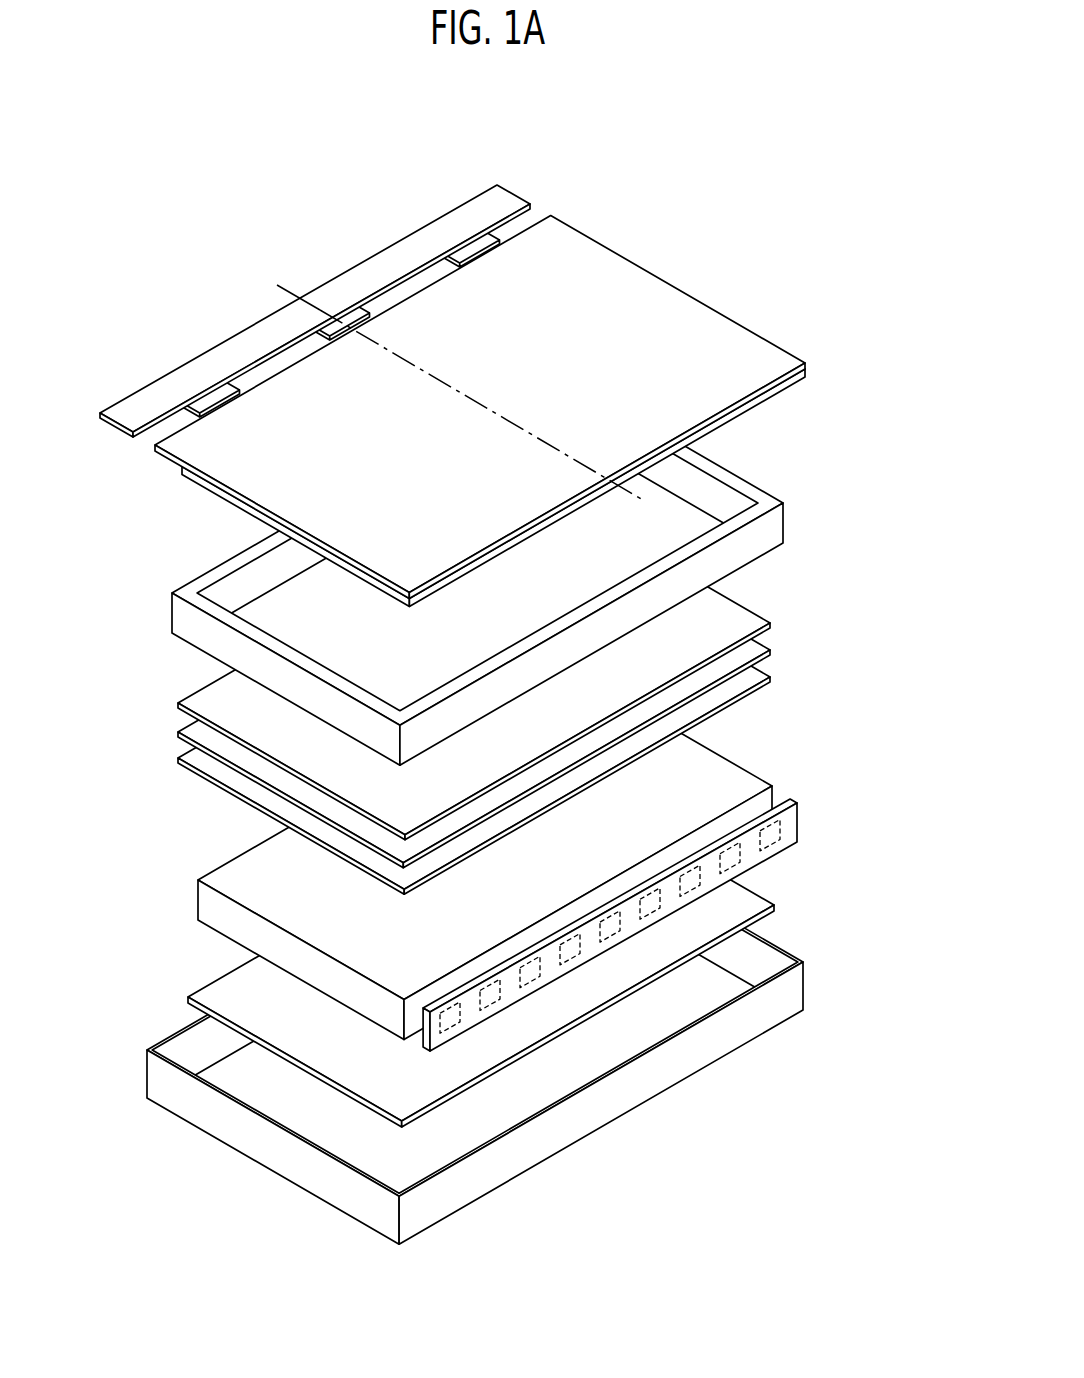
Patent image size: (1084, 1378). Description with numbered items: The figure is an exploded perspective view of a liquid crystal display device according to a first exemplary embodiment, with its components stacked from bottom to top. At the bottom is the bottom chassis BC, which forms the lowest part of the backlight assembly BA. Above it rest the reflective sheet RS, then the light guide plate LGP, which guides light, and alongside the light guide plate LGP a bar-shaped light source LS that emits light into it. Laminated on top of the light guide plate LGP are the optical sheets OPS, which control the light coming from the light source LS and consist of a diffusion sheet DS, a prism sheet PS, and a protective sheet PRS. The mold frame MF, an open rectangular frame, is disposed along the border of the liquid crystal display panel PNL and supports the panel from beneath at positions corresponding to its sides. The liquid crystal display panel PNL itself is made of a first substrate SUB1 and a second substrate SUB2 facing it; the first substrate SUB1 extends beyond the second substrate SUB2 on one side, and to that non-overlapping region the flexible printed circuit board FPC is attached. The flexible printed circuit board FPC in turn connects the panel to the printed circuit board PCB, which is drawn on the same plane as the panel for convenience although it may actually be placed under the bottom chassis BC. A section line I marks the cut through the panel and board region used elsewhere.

The liquid crystal display panel PNL is at (557, 411).
The first substrate SUB1 is at (809, 365).
The second substrate SUB2 is at (809, 374).
The printed circuit board PCB is at (123, 417).
The flexible printed circuit board FPC is at (200, 408).
The mold frame MF is at (775, 503).
The backlight assembly BA is at (565, 809).
The optical sheets OPS is at (545, 692).
The protective sheet PRS is at (775, 619).
The prism sheet PS is at (775, 646).
The diffusion sheet DS is at (775, 673).
The light guide plate LGP is at (768, 775).
The light source LS is at (792, 822).
The reflective sheet RS is at (770, 902).
The bottom chassis BC is at (790, 988).
The section line I-I' I is at (460, 397).